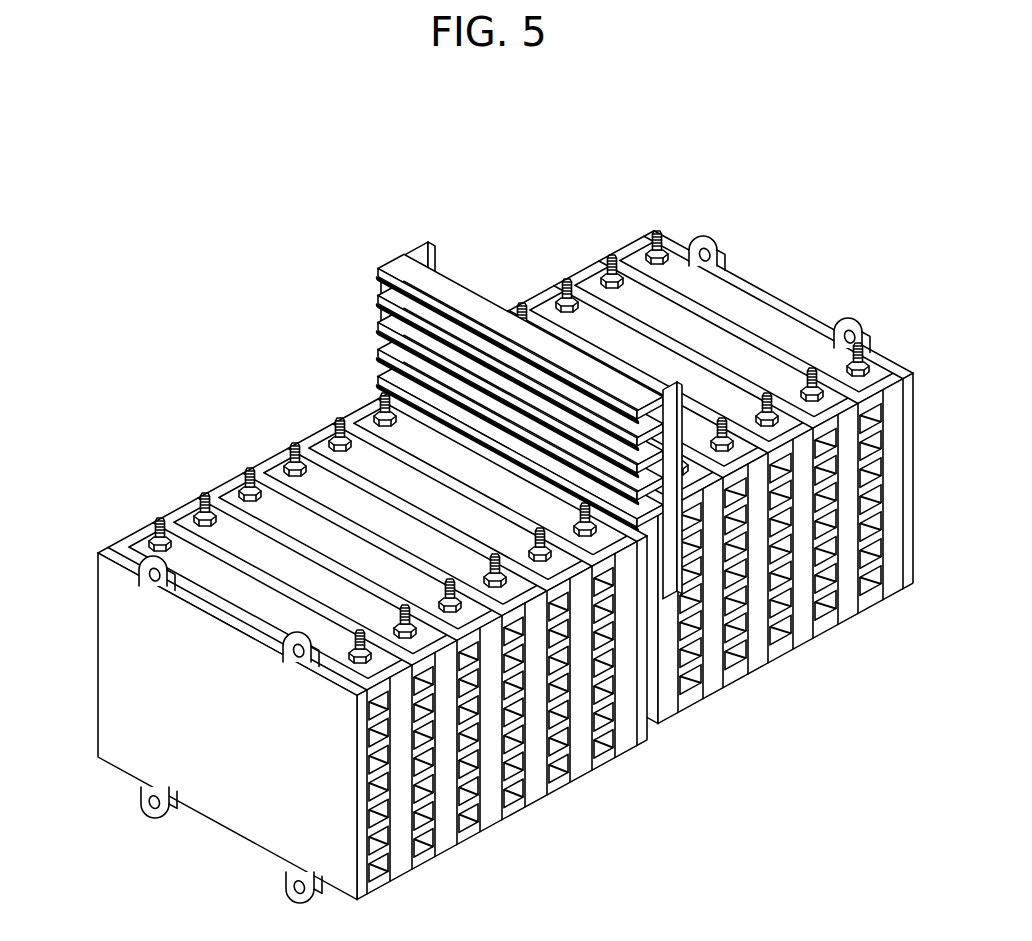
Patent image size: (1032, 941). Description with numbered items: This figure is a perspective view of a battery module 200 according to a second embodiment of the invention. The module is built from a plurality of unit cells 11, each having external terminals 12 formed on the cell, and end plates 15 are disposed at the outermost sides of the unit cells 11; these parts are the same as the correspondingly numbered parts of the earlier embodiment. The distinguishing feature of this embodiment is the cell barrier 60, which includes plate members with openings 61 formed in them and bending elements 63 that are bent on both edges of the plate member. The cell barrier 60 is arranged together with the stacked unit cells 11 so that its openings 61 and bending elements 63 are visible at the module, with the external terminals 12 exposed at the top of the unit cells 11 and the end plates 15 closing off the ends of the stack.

The battery module 200 is at (240, 195).
The unit cells 11 is at (767, 316).
The external terminals 12 is at (657, 233).
The end plates 15 is at (125, 668).
The cell barrier 60 is at (458, 392).
The openings 61 is at (412, 342).
The bending elements 63 is at (411, 246).